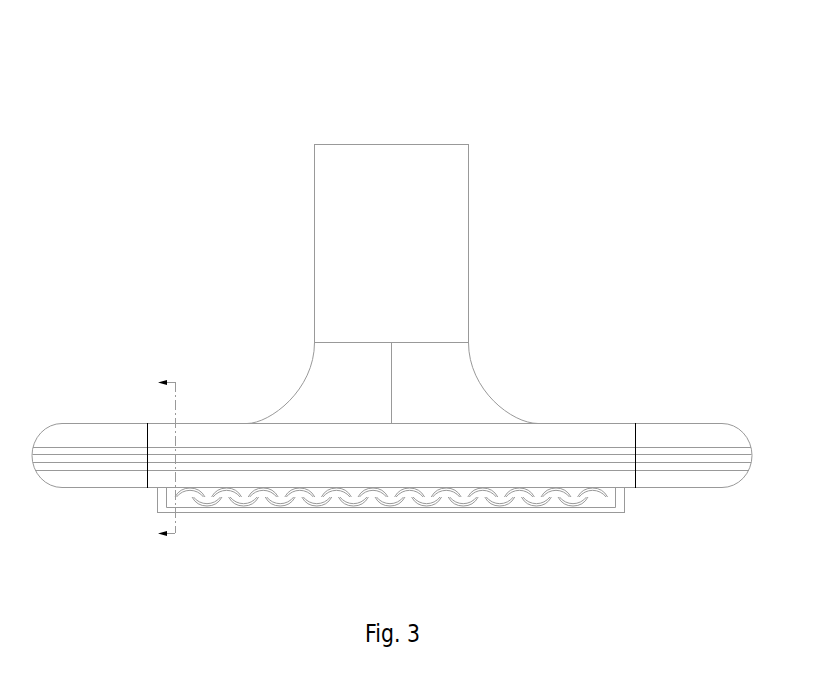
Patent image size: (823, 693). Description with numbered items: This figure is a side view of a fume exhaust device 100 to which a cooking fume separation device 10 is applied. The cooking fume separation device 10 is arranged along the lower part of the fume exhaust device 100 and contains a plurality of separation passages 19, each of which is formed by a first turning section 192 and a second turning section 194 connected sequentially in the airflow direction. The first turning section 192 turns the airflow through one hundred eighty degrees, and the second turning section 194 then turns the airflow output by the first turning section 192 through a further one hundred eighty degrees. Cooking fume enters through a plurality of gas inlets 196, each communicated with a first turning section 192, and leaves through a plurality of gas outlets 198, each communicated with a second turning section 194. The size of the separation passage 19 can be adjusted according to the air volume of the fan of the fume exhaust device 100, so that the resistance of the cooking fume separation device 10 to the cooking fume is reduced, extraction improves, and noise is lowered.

The fume exhaust device 100 is at (160, 55).
The cooking fume separation device 10 is at (413, 491).
The separation passage 19 is at (399, 490).
The first turning section 192 is at (616, 490).
The second turning section 194 is at (567, 508).
The gas inlet 196 is at (552, 503).
The gas outlet 198 is at (585, 492).